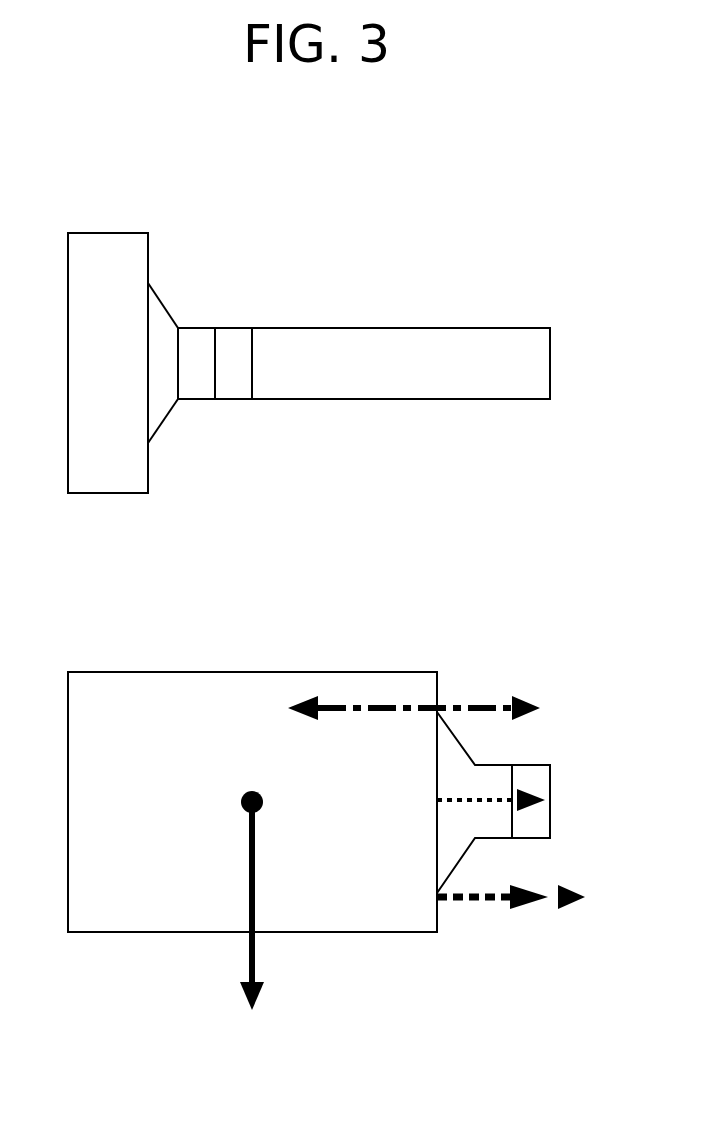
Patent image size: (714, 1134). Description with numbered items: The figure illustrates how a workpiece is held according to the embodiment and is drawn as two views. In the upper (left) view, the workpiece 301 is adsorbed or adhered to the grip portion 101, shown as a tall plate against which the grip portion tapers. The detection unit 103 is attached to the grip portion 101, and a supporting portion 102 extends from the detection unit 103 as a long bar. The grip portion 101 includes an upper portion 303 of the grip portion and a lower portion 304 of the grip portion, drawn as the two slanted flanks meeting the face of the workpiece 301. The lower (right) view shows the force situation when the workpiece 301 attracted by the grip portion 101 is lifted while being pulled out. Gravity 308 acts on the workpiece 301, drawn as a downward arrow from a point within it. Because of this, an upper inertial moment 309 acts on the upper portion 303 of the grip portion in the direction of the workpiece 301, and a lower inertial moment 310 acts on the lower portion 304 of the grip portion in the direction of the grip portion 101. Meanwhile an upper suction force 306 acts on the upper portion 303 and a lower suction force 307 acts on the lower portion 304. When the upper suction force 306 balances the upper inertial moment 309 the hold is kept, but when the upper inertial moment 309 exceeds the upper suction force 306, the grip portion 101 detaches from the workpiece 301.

The grip portion 101 is at (190, 385).
The supporting portion 102 is at (434, 345).
The detection unit 103 is at (241, 345).
The workpiece 301 is at (120, 250).
The upper portion of the grip portion 303 is at (148, 283).
The lower portion of the grip portion 304 is at (148, 443).
The upper suction force 306 is at (468, 695).
The lower suction force 307 is at (490, 883).
The gravity 308 is at (255, 958).
The upper inertial moment 309 is at (380, 708).
The lower inertial moment 310 is at (555, 908).